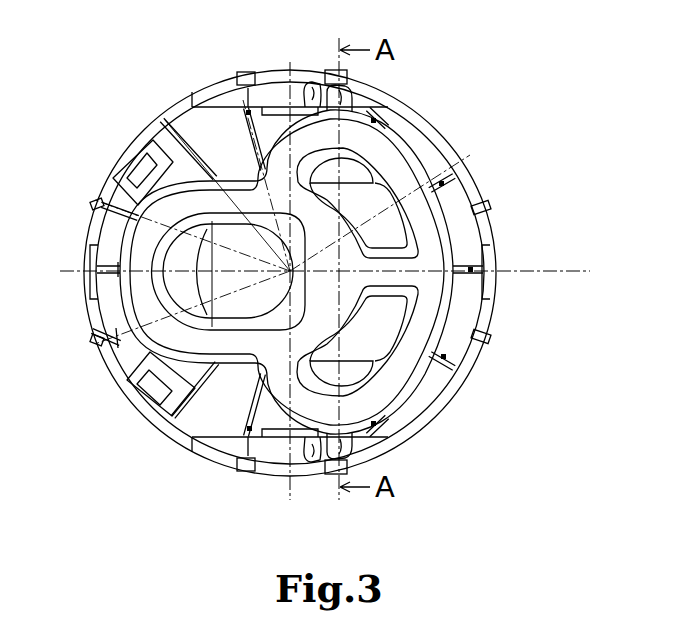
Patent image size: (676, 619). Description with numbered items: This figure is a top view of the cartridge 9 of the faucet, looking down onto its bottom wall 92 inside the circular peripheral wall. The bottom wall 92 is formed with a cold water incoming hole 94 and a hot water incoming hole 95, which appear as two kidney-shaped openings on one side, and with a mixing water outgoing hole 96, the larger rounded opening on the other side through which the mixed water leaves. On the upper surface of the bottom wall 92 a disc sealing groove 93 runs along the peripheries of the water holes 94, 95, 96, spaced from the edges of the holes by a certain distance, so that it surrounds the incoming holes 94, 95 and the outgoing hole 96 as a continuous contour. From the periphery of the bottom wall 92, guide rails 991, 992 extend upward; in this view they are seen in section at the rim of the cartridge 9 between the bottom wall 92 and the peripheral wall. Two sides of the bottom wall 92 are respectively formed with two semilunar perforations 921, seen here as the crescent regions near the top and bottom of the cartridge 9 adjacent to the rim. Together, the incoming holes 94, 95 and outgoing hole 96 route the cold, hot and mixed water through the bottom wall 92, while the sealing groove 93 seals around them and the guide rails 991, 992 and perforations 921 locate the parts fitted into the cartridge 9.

The cartridge 9 is at (490, 323).
The bottom wall 92 is at (212, 140).
The semilunar perforation 921 is at (262, 92).
The disc sealing groove 93 is at (425, 262).
The cold water incoming hole 94 is at (353, 367).
The hot water incoming hole 95 is at (357, 173).
The mixing water outgoing hole 96 is at (207, 293).
The guide rail 991 is at (143, 167).
The guide rail 992 is at (306, 42).